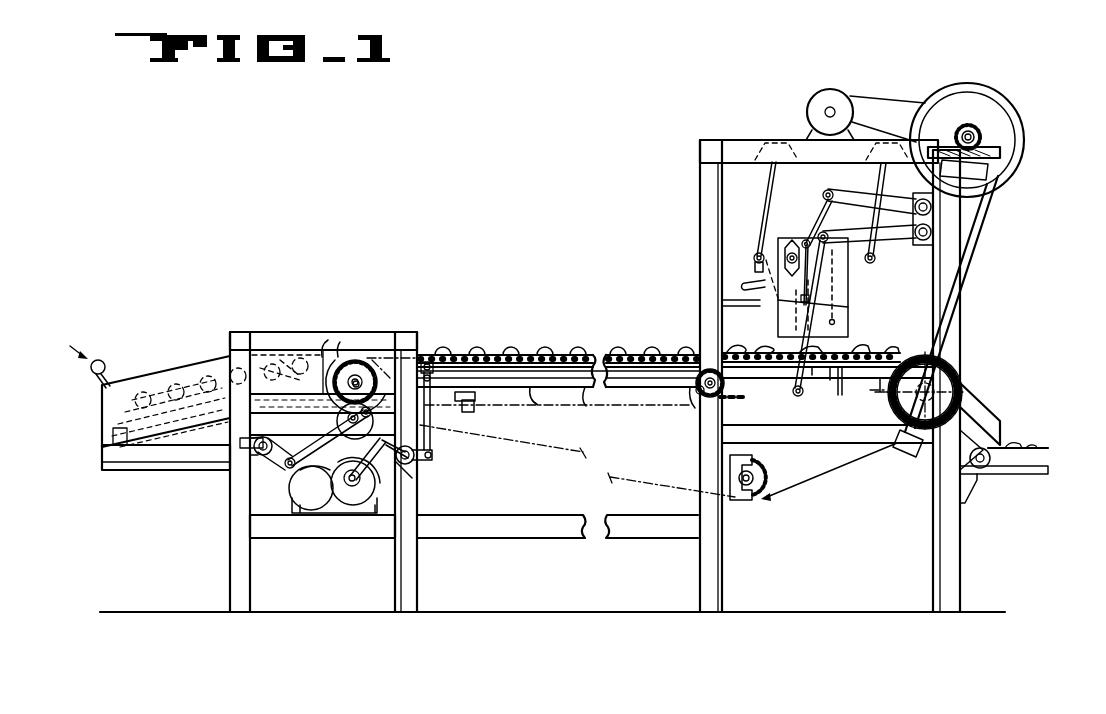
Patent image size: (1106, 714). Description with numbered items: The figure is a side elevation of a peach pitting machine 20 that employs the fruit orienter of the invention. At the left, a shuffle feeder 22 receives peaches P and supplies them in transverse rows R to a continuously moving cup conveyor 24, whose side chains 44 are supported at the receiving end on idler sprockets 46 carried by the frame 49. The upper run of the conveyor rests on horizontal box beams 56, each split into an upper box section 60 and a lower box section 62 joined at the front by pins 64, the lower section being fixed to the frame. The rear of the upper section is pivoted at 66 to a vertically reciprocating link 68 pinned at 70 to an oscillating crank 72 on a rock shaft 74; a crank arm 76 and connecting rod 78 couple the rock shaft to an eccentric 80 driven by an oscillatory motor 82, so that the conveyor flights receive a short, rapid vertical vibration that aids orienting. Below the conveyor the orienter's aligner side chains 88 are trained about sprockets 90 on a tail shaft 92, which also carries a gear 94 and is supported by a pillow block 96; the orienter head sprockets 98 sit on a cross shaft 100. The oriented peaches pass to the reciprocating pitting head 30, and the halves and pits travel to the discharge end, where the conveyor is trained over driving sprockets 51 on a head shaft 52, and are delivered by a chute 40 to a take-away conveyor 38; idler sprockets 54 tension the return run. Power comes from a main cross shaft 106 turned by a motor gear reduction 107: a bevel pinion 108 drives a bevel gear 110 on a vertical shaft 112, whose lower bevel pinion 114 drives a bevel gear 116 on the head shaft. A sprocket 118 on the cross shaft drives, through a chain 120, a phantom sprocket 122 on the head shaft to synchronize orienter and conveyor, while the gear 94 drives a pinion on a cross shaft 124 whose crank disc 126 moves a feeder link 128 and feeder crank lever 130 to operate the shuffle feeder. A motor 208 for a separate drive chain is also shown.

The peach pitting machine 20 is at (522, 170).
The shuffle feeder 22 is at (188, 360).
The transverse rows R is at (243, 358).
The cup conveyor 24 is at (518, 338).
The peaches P is at (682, 352).
The pitting head 30 is at (746, 304).
The take-away conveyor 38 is at (1040, 447).
The chute 40 is at (982, 411).
The conveyor side chains 44 is at (585, 360).
The idler sprockets 46 is at (358, 344).
The frame 49 is at (228, 515).
The driving sprockets 51 is at (961, 379).
The head shaft 52 is at (953, 361).
The idler sprockets 54 is at (768, 495).
The horizontal box beams 56 is at (588, 390).
The upper box section 60 is at (530, 366).
The lower box section 62 is at (535, 388).
The pins 64 is at (700, 386).
The pivot 66 is at (432, 362).
The vertically reciprocating links 68 is at (458, 402).
The pin 70 is at (433, 455).
The oscillating crank 72 is at (434, 462).
The rock shaft 74 is at (441, 466).
The crank arm 76 is at (410, 450).
The connecting rod 78 is at (413, 471).
The eccentric 80 is at (355, 501).
The oscillatory motor 82 is at (326, 505).
The aligner side chains 88 is at (575, 408).
The sprockets 90 is at (368, 343).
The tail shaft 92 is at (332, 360).
The gear 94 is at (373, 356).
The pillow block 96 is at (352, 361).
The head sprockets 98 is at (679, 413).
The cross shaft 100 is at (724, 385).
The main cross shaft 106 is at (984, 136).
The motor gear reduction 107 is at (832, 96).
The bevel pinion 108 is at (968, 126).
The bevel gear 110 is at (1001, 151).
The vertical shaft 112 is at (955, 223).
The bevel pinion 114 is at (842, 465).
The bevel gear 116 is at (965, 393).
The sprocket 118 is at (722, 404).
The chain 120 is at (836, 398).
The sprocket 122 is at (882, 396).
The cross shaft 124 is at (357, 438).
The crank disc 126 is at (333, 420).
The feeder link 128 is at (300, 481).
The feeder crank lever 130 is at (275, 468).
The motor 208 is at (476, 406).